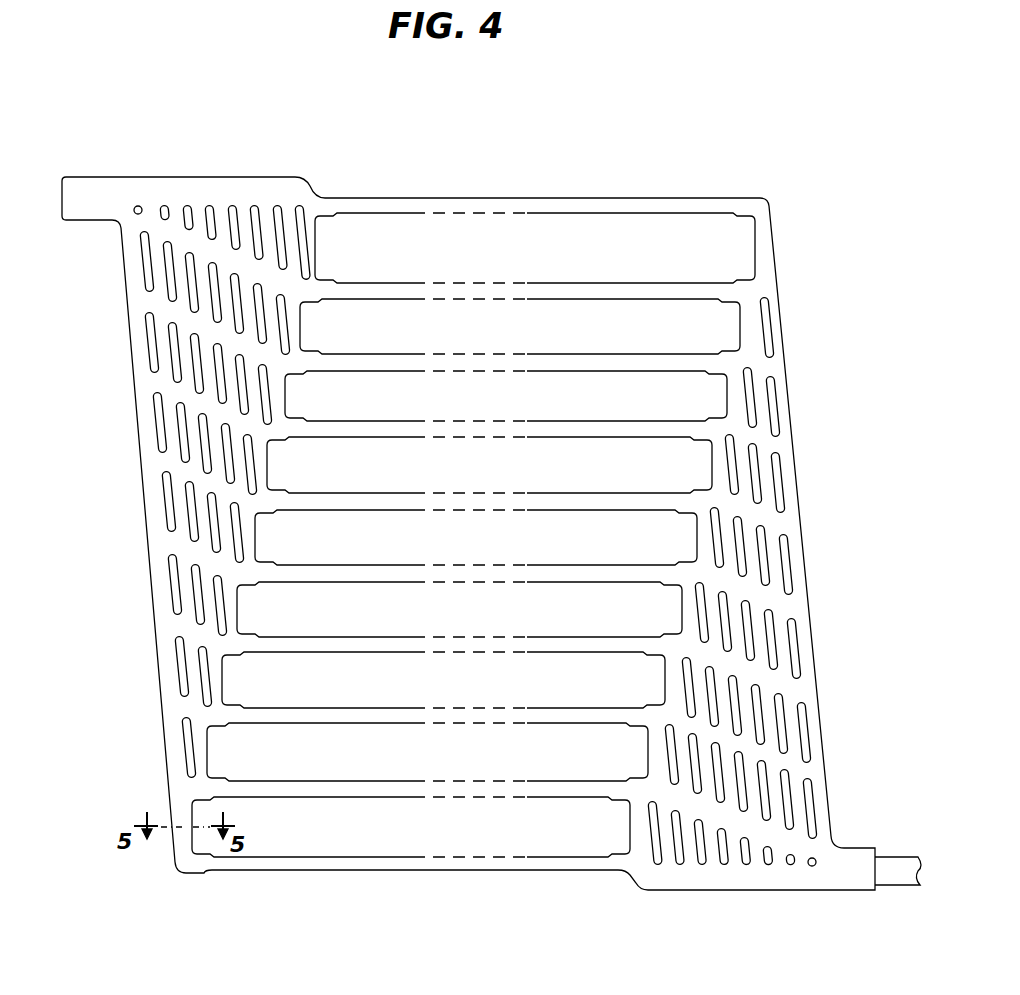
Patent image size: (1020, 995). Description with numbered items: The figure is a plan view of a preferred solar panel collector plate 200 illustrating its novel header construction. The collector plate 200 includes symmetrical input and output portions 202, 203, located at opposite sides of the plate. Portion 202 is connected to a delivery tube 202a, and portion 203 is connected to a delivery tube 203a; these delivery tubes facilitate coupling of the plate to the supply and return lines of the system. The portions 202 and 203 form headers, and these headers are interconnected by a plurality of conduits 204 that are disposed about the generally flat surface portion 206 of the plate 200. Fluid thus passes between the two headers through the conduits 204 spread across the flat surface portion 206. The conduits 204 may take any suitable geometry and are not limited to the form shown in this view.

The solar panel collector plate 200 is at (530, 950).
The input portion 202 is at (830, 897).
The delivery tube 202a is at (903, 812).
The output portion 203 is at (293, 160).
The delivery tube 203a is at (94, 222).
The conduits 204 is at (400, 563).
The flat surface portion 206 is at (662, 243).